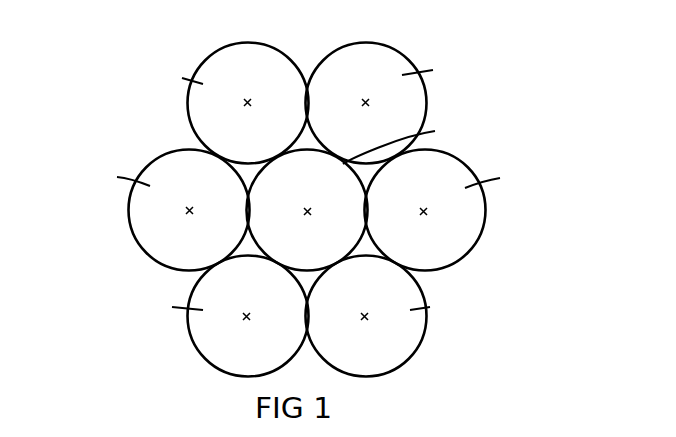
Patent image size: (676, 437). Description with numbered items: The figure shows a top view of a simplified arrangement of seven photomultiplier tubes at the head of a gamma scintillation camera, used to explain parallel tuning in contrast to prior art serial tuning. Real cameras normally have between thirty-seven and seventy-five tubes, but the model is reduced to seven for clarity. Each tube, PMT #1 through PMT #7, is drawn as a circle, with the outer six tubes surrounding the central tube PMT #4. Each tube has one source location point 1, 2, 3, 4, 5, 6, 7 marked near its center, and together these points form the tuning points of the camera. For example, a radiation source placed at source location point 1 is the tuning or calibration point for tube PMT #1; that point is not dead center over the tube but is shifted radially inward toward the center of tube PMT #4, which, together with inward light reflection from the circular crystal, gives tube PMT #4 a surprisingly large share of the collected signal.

The source location point 1 is at (247, 98).
The source location point 2 is at (365, 98).
The source location point 3 is at (189, 210).
The source location point 4 is at (308, 211).
The source location point 5 is at (424, 212).
The source location point 6 is at (246, 317).
The source location point 7 is at (365, 317).